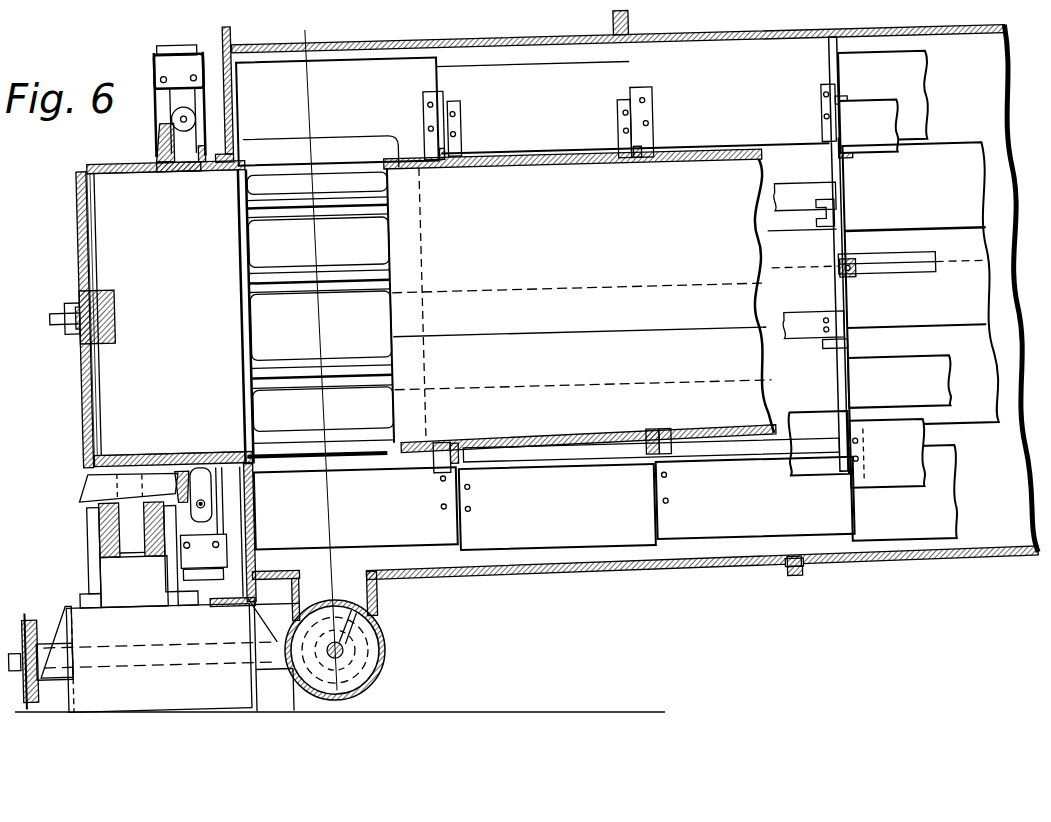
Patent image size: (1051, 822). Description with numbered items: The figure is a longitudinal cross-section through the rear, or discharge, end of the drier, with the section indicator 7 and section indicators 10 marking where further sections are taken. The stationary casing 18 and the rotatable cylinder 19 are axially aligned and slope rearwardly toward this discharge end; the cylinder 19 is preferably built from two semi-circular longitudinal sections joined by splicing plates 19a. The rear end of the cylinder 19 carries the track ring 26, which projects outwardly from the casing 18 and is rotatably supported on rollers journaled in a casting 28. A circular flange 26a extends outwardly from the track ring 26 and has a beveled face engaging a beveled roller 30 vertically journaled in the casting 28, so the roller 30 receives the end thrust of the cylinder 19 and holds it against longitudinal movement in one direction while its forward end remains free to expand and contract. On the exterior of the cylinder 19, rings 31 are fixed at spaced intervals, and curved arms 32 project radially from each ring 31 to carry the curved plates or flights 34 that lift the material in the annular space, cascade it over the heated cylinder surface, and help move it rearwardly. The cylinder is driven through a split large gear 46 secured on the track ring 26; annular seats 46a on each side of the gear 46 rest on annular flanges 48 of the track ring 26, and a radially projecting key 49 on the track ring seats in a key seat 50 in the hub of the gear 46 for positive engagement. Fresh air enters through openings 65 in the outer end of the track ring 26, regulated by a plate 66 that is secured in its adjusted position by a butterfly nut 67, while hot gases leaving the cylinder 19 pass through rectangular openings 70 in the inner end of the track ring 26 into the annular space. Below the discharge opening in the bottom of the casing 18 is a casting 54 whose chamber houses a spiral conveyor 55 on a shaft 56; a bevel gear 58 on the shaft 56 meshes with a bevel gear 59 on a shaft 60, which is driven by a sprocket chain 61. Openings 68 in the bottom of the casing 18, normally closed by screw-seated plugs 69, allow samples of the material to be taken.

The section line 7- 7 is at (440, 698).
The pivoted lever 10 is at (202, 487).
The stationary casing 18 is at (628, 572).
The cylinder 19 is at (581, 301).
The splicing plates 19a is at (787, 248).
The track ring 26 is at (110, 160).
The circular flange 26a is at (75, 153).
The casting 28 is at (107, 533).
The beveled roller 30 is at (92, 482).
The rings 31 is at (846, 294).
The curved arms 32 is at (458, 106).
The curved plates or flights 34 is at (888, 118).
The large gear 46 is at (177, 47).
The annular seats or shoulders 46a is at (297, 102).
The annular shoulders or flanges 48 is at (197, 174).
The lug or key 49 is at (191, 477).
The notch or key seat 50 is at (214, 490).
The casting 54 is at (383, 629).
The spiral conveyor 55 is at (374, 656).
The shaft 56 is at (341, 640).
The bevel gear 58 is at (370, 661).
The bevel gear 59 is at (275, 654).
The shaft 60 is at (141, 657).
The sprocket chain 61 is at (28, 620).
The openings 65 is at (101, 246).
The plate 66 is at (82, 223).
The butterfly nut 67 is at (57, 318).
The openings 68 is at (770, 566).
The plugs 69 is at (795, 575).
The rectangular openings 70 is at (350, 166).